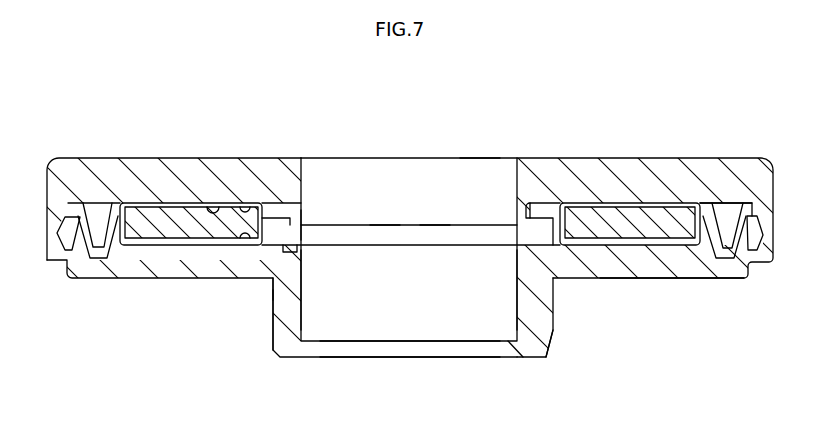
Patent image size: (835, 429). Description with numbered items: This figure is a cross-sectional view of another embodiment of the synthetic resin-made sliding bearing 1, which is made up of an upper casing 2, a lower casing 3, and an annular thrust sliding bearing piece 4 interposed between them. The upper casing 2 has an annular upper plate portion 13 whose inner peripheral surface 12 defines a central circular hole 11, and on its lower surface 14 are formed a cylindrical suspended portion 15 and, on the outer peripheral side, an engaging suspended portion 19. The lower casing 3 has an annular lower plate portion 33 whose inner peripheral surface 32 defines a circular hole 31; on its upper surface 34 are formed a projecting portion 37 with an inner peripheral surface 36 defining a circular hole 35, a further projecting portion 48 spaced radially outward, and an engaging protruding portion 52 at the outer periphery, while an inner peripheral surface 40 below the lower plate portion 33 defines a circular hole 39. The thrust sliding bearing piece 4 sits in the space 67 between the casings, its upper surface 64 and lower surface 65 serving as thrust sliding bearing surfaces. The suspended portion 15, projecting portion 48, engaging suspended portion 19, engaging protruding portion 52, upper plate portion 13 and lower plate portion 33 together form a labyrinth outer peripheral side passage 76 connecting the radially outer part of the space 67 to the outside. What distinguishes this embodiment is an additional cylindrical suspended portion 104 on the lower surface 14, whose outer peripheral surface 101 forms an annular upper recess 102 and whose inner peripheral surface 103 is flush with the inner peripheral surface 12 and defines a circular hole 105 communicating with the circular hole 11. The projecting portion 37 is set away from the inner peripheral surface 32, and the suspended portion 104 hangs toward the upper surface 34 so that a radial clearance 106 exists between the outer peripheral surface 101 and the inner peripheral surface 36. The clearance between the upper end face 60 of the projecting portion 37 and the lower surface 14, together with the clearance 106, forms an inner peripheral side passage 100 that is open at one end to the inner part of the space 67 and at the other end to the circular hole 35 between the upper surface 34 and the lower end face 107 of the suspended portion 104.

The synthetic resin-made sliding bearing 1 is at (126, 312).
The upper casing 2 is at (180, 156).
The lower casing 3 is at (207, 280).
The thrust sliding bearing piece 4 is at (662, 202).
The circular hole 11 is at (475, 170).
The inner peripheral surface 12 is at (303, 177).
The upper plate portion 13 is at (623, 172).
The lower surface 14 is at (213, 210).
The suspended portion 15 is at (88, 232).
The engaging suspended portion 19 is at (57, 250).
The circular hole 31 is at (384, 268).
The inner peripheral surface 32 is at (303, 262).
The lower plate portion 33 is at (623, 268).
The upper surface 34 is at (362, 240).
The circular hole 35 is at (480, 237).
The inner peripheral surface 36 is at (269, 290).
The projecting portion 37 is at (544, 226).
The circular hole 39 is at (445, 322).
The inner peripheral surface 40 is at (511, 330).
The projecting portion 48 is at (708, 202).
The engaging protruding portion 52 is at (742, 222).
The upper end face 60 is at (271, 205).
The upper surface 64 is at (598, 210).
The lower surface 65 is at (668, 250).
The space 67 is at (261, 205).
The outer peripheral side passage 76 is at (760, 232).
The inner peripheral side passage 100 is at (534, 203).
The outer peripheral surface 101 is at (288, 222).
The upper recess 102 is at (123, 206).
The inner peripheral surface 103 is at (430, 214).
The suspended portion 104 is at (302, 223).
The circular hole 105 is at (385, 212).
The radial clearance 106 is at (534, 248).
The lower end face 107 is at (415, 248).